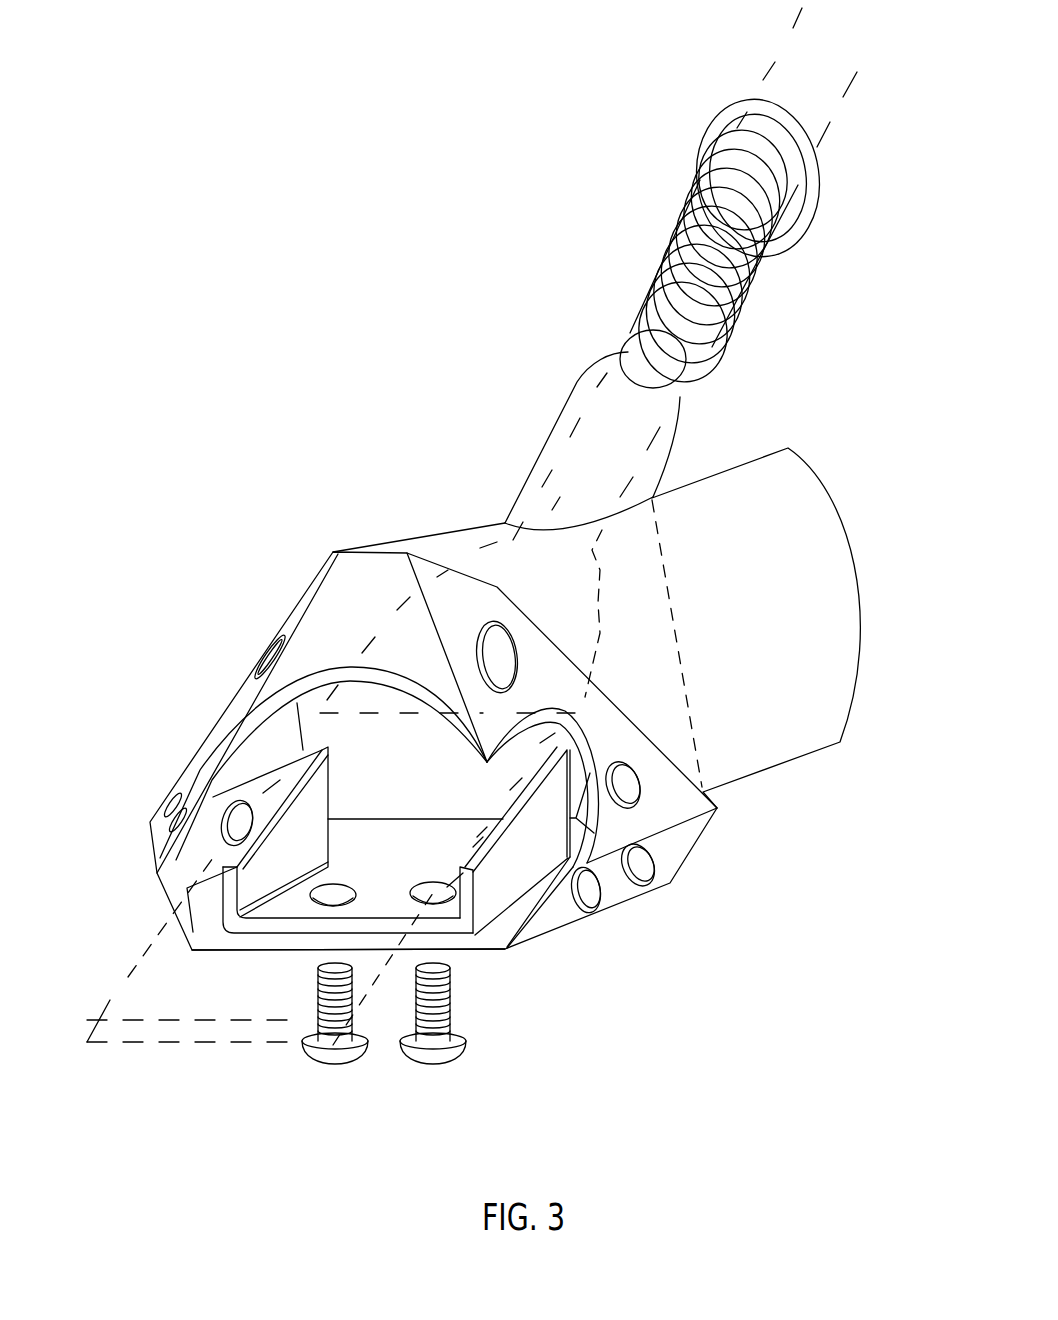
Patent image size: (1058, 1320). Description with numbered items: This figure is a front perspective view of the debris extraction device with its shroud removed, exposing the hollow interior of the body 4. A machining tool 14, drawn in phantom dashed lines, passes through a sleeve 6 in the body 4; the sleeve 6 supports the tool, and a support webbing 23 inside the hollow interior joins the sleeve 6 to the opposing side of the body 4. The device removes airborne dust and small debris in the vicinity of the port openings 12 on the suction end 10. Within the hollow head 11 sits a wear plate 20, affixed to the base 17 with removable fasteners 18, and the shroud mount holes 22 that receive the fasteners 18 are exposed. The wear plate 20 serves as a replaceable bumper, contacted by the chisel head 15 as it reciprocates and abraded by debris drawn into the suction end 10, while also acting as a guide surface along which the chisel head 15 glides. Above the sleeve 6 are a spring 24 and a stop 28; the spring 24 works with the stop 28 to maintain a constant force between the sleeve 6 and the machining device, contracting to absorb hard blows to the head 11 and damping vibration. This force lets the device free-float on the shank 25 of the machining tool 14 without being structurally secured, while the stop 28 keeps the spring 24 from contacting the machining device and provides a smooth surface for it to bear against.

The body 4 is at (770, 733).
The sleeve 6 is at (558, 430).
The suction end 10 is at (155, 681).
The head 11 is at (155, 786).
The port openings 12 is at (627, 783).
The machining tool 14 is at (153, 950).
The chisel head 15 is at (210, 1022).
The base 17 is at (493, 957).
The fasteners 18 is at (425, 1055).
The wear plate 20 is at (314, 857).
The shroud mount holes 22 is at (262, 663).
The support webbing 23 is at (666, 590).
The spring 24 is at (682, 227).
The shank 25 is at (836, 103).
The stop 28 is at (712, 127).